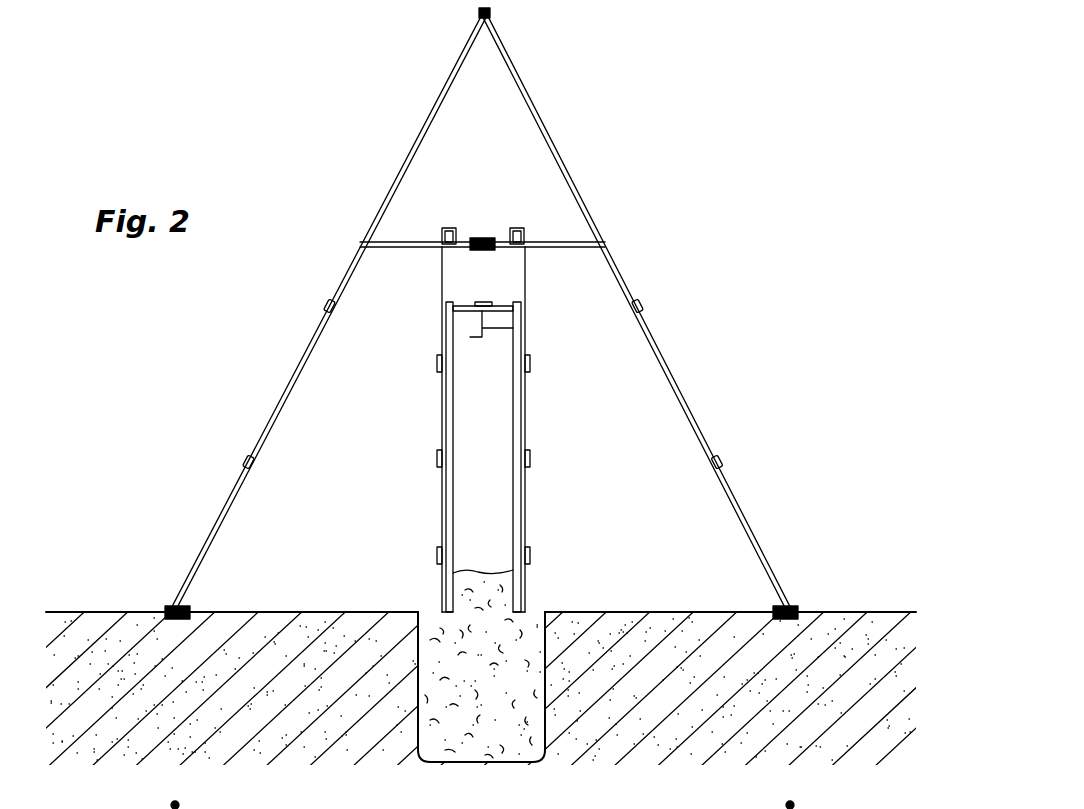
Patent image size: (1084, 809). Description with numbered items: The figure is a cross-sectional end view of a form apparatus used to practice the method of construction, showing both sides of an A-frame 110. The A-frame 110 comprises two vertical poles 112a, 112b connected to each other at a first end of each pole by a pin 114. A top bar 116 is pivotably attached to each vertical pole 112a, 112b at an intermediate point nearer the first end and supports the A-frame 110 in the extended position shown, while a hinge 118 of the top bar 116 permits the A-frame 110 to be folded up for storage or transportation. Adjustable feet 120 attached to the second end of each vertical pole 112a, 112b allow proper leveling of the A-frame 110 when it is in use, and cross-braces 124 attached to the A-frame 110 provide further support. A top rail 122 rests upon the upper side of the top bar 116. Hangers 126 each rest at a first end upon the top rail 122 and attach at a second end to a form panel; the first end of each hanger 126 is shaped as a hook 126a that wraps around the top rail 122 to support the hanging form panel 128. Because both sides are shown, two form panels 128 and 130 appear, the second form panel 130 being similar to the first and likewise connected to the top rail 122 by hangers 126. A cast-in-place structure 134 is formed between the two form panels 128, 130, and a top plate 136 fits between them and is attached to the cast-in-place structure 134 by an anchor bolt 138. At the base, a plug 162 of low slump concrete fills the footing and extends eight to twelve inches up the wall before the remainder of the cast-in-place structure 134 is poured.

The A-frame 110 is at (485, 310).
The vertical pole 112a is at (230, 499).
The vertical pole 112b is at (736, 499).
The pin 114 is at (492, 13).
The top bar 116 is at (413, 242).
The hinge 118 is at (484, 238).
The adjustable feet 120 is at (172, 606).
The top rail 122 is at (450, 249).
The cross-brace 124 is at (323, 311).
The hanger 126 is at (441, 292).
The hook 126a is at (449, 228).
The form panel 128 is at (448, 410).
The second form panel 130 is at (516, 424).
The cast-in-place structure 134 is at (484, 507).
The top plate 136 is at (470, 309).
The anchor bolt 138 is at (512, 328).
The plug 162 is at (515, 655).